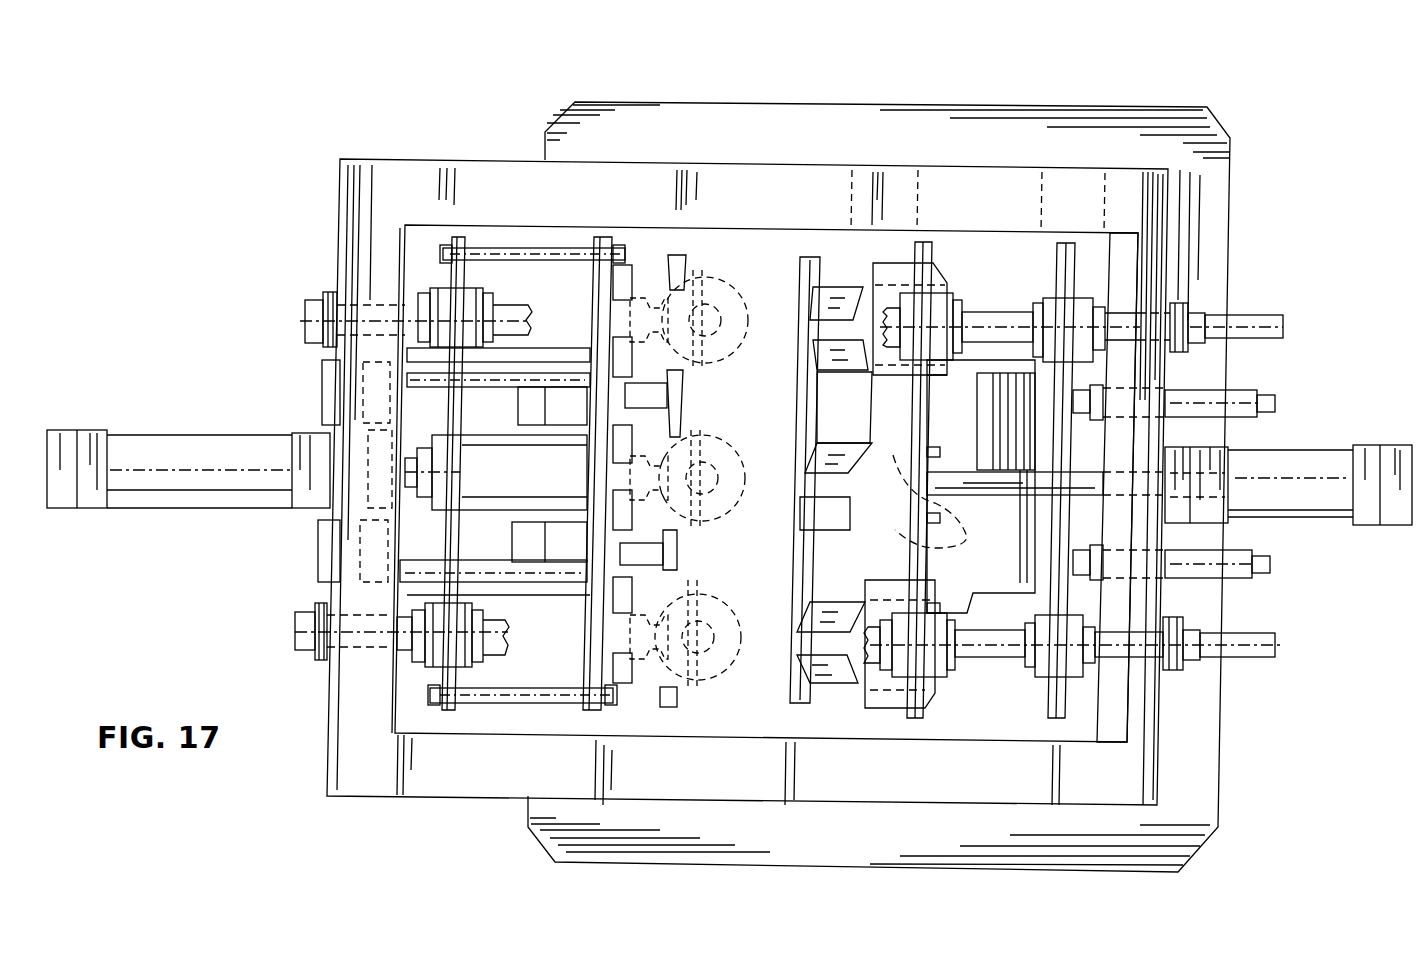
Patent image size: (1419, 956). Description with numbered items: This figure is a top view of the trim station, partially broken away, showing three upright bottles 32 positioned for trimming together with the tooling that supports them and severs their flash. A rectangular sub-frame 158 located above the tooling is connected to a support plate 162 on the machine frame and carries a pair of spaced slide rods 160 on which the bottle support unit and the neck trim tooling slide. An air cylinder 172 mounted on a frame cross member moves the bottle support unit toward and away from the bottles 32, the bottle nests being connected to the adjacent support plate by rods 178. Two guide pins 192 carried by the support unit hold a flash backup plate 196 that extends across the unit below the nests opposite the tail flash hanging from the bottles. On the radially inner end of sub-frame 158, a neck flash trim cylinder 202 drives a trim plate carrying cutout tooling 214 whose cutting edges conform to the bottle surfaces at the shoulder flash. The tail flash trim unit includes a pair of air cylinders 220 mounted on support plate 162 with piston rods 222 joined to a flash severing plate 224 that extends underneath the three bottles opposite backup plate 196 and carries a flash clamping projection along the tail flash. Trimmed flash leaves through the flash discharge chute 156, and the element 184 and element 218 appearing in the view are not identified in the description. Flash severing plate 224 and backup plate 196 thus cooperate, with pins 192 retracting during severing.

The bottle 32 is at (728, 280).
The flash discharge chute 156 is at (1020, 395).
The rectangular sub-frame 158 is at (510, 165).
The slide rod 160 is at (990, 315).
The support plate 162 is at (1158, 108).
The air cylinder 172 is at (1335, 516).
The rod 178 is at (1029, 486).
The wedge blocks 184 is at (797, 495).
The guide pin 192 is at (1268, 320).
The flash backup plate 196 is at (813, 257).
The neck flash trim cylinder 202 is at (147, 490).
The cutout tooling 214 is at (615, 290).
The guide shaft 218 is at (1277, 405).
The air cylinder 220 is at (320, 393).
The piston rod 222 is at (625, 550).
The flash severing plate 224 is at (677, 255).